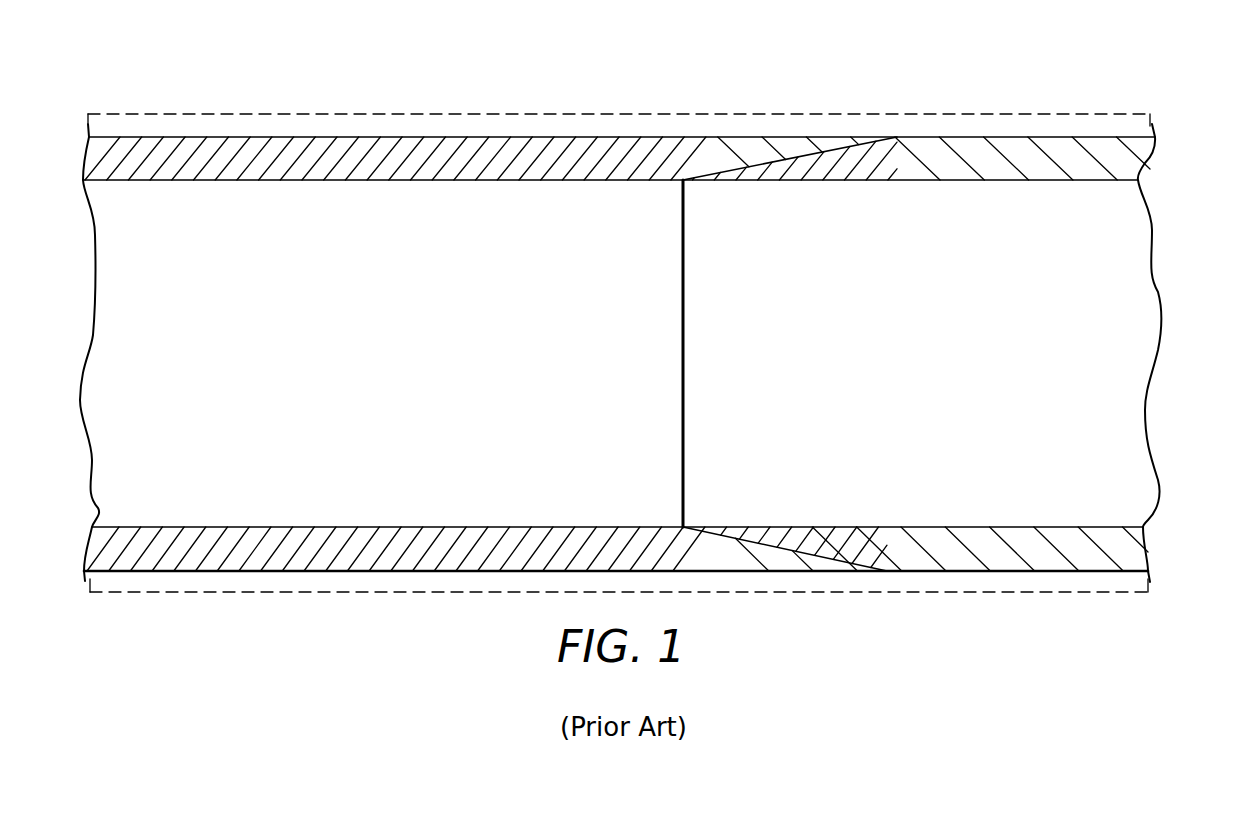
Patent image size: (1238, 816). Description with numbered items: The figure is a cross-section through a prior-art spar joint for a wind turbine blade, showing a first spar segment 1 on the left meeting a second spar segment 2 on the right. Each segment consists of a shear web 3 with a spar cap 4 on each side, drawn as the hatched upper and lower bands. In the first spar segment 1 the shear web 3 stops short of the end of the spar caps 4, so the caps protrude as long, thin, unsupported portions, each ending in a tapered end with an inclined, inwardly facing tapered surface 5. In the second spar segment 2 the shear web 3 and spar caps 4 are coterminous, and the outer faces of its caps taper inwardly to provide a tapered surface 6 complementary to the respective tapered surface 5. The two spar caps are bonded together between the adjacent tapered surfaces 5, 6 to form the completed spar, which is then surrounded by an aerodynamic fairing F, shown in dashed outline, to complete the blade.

The aerodynamic fairing F is at (140, 113).
The first spar segment 1 is at (349, 366).
The second spar segment 2 is at (938, 366).
The shear web 3 is at (278, 207).
The spar cap 4 is at (452, 152).
The tapered surface 5 is at (814, 147).
The tapered surface 6 is at (782, 163).